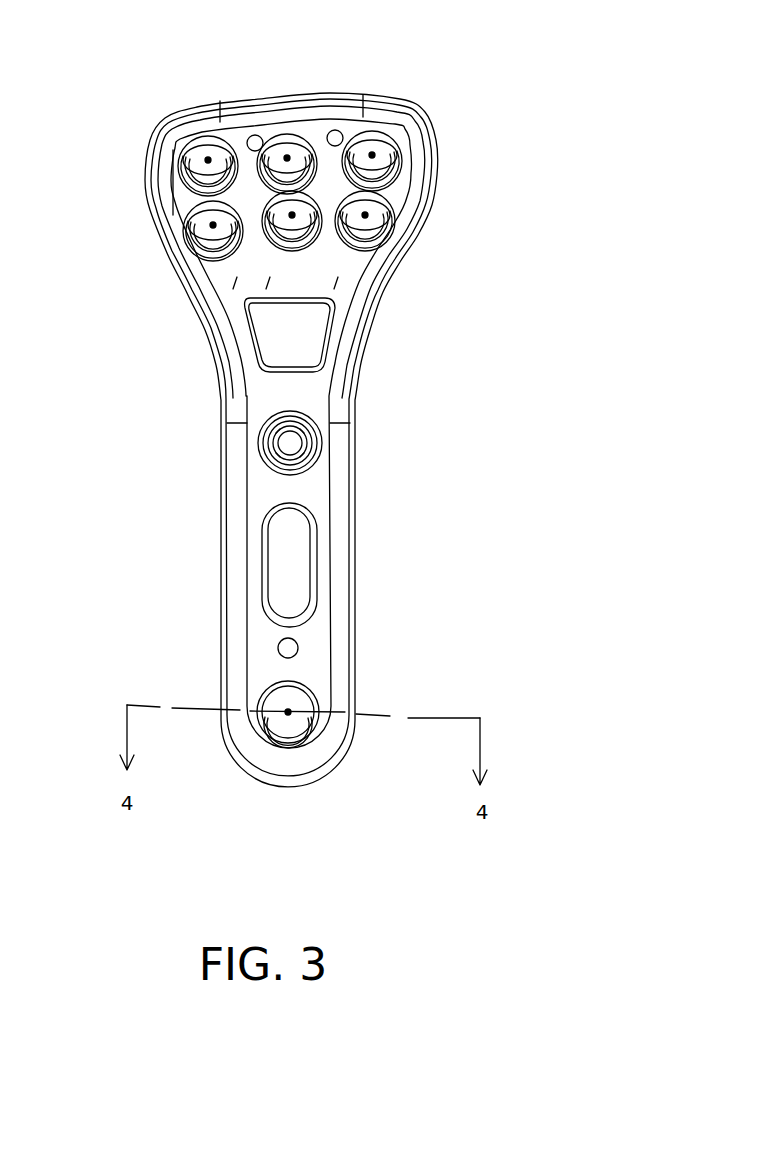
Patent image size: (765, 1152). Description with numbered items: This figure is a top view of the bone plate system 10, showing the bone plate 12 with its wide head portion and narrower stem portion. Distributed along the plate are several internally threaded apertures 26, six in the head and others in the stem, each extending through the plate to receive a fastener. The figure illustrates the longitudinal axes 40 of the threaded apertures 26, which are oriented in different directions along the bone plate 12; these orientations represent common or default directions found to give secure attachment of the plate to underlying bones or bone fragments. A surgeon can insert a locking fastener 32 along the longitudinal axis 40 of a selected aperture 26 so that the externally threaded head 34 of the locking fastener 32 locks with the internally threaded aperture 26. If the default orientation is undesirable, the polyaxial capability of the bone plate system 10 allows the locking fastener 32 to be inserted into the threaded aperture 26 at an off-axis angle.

The bone plate system 10 is at (598, 92).
The bone plate 12 is at (371, 526).
The internally threaded aperture 26 is at (197, 147).
The locking fastener 32 is at (278, 400).
The externally threaded head 34 is at (265, 442).
The longitudinal axis 40 is at (312, 172).